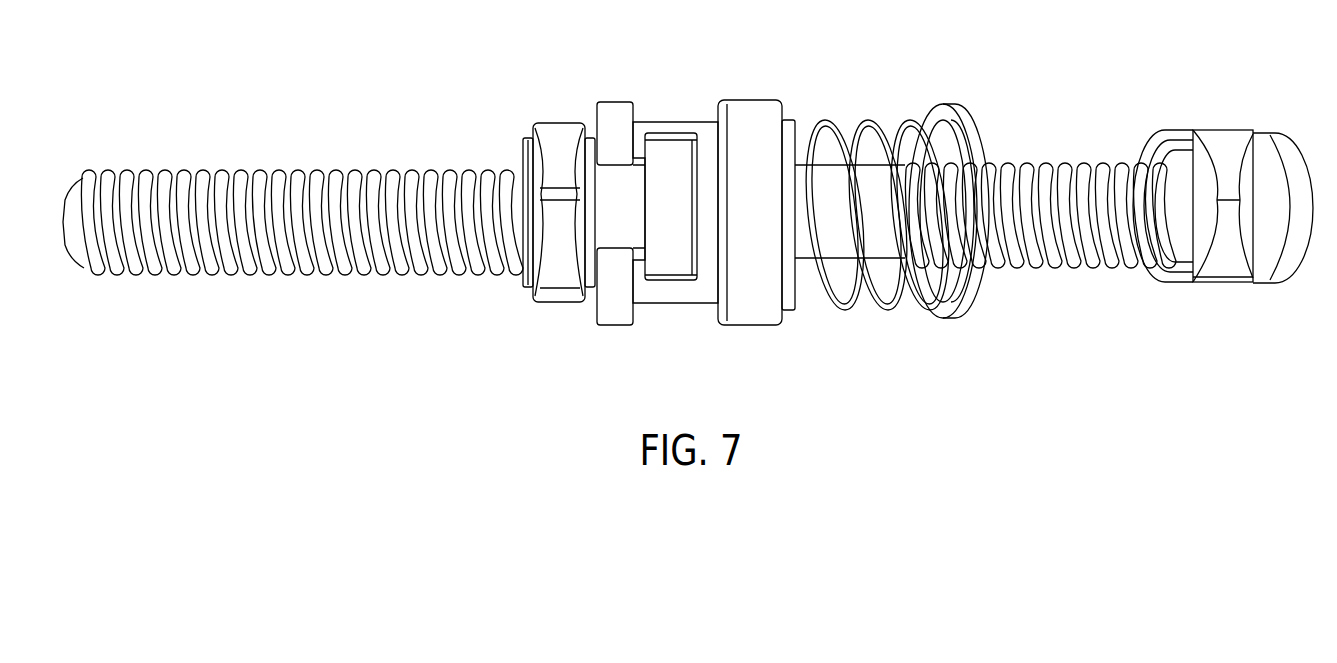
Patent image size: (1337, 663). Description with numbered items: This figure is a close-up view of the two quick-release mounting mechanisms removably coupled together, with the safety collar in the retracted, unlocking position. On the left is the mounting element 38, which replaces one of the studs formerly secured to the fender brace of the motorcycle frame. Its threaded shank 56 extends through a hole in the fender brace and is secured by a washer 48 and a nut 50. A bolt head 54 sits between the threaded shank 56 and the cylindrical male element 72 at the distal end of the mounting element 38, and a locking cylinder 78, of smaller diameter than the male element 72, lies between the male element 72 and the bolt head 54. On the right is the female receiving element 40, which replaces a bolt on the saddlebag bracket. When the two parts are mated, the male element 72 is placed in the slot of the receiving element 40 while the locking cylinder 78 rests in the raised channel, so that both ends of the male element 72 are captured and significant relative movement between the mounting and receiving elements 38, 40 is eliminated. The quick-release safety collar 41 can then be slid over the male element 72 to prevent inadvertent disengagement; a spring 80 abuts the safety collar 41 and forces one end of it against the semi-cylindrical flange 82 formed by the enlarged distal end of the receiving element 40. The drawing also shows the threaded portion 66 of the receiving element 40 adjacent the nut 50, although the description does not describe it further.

The mounting element 38 is at (63, 67).
The receiving element 40 is at (677, 67).
The threaded shank 56 is at (273, 267).
The bolt head 54 is at (557, 298).
The locking cylinder 78 is at (613, 240).
The semi-cylindrical flange 82 is at (637, 108).
The male element 72 is at (672, 247).
The quick-release safety collar 41 is at (753, 315).
The spring 80 is at (848, 307).
The washer 48 is at (962, 310).
The threaded shaft 66 is at (1093, 258).
The nut 50 is at (1212, 273).